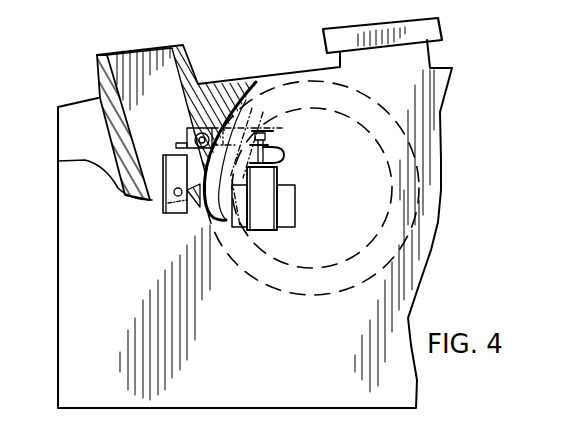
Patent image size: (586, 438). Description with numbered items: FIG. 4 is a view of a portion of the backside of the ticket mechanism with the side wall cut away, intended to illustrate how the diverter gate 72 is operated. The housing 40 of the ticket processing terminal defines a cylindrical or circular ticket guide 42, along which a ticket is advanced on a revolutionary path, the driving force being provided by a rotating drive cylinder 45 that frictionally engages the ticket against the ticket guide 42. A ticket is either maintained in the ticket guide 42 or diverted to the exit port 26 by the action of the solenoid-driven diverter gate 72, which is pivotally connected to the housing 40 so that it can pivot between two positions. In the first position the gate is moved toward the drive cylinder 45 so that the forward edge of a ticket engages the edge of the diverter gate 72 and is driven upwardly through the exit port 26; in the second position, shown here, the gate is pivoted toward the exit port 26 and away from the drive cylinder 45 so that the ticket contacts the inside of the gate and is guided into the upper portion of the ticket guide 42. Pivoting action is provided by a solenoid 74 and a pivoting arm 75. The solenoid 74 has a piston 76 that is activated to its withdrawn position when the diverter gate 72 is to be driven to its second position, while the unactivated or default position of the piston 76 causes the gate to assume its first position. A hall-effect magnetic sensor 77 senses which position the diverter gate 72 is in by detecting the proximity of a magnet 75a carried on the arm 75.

The exit port 26 is at (145, 52).
The housing 40 is at (68, 297).
The ticket guide 42 is at (231, 84).
The drive cylinder 45 is at (278, 77).
The diverter gate 72 is at (181, 156).
The solenoid 74 is at (266, 202).
The pivoting arm 75 is at (248, 111).
The magnet 75a is at (178, 143).
The piston 76 is at (284, 155).
The hall-effect magnetic sensor 77 is at (171, 190).